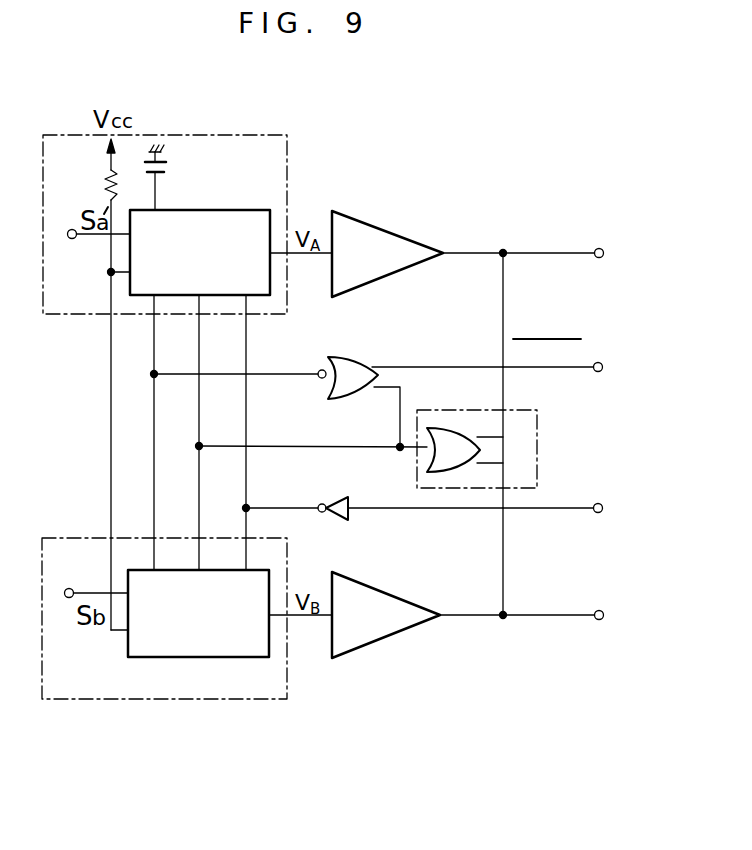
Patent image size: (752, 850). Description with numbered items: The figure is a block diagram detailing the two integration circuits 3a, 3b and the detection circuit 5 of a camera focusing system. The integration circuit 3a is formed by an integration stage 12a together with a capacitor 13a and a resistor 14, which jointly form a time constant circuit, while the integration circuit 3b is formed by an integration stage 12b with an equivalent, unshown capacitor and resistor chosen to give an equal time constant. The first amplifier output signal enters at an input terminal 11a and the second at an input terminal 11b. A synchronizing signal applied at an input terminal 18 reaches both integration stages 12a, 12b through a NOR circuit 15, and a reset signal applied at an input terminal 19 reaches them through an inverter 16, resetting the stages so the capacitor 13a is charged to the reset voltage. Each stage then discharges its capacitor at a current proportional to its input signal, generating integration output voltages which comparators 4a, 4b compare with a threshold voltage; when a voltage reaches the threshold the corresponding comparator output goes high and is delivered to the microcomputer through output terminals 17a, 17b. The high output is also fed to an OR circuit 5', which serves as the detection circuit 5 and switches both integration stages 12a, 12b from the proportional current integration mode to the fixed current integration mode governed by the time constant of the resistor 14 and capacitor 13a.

The integration circuit 3a is at (250, 135).
The integration circuit 3b is at (232, 699).
The comparator 4a is at (395, 237).
The comparator 4b is at (392, 634).
The detection circuit 5 is at (391, 449).
The OR circuit 5' is at (365, 450).
The input terminal 11a is at (72, 239).
The input terminal 11b is at (70, 588).
The integration stage 12a is at (233, 210).
The integration stage 12b is at (202, 657).
The capacitor 13a is at (164, 170).
The resistor 14 is at (107, 180).
The NOR circuit 15 is at (357, 358).
The inverter 16 is at (345, 497).
The output terminal 17a is at (604, 253).
The output terminal 17b is at (604, 615).
The input terminal 18 is at (603, 367).
The input terminal 19 is at (603, 508).